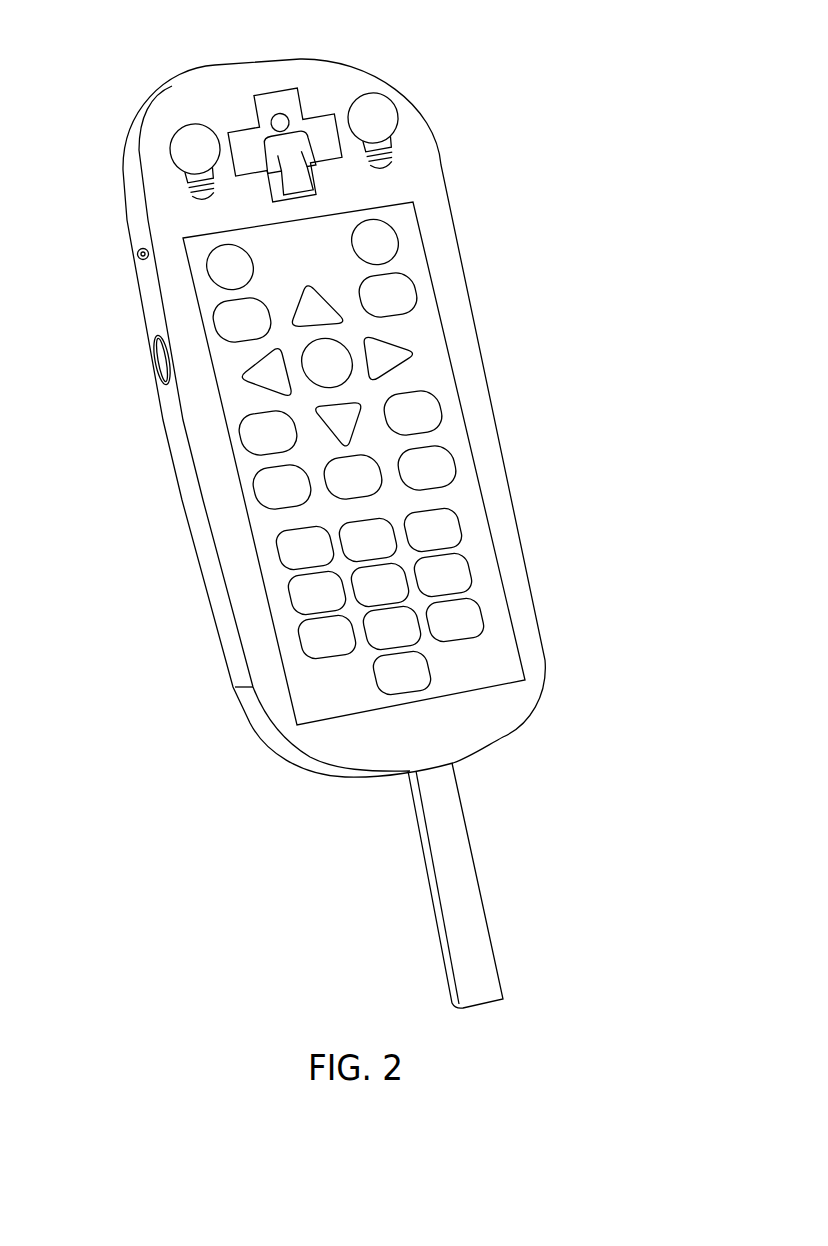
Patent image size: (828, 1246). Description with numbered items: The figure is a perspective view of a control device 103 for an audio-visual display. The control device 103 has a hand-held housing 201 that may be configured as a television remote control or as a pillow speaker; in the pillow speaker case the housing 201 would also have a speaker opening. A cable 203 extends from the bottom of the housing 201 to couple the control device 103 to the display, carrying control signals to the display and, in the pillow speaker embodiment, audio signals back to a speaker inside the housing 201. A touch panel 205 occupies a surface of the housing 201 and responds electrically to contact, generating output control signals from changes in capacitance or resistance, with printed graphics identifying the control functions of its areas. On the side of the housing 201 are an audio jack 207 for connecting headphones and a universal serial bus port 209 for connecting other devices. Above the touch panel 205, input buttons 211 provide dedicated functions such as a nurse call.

The control device 103 is at (508, 234).
The housing 201 is at (503, 737).
The cable 203 is at (480, 883).
The touch panel 205 is at (462, 493).
The audio jack 207 is at (138, 256).
The universal serial bus port 209 is at (155, 364).
The input buttons 211 is at (290, 92).